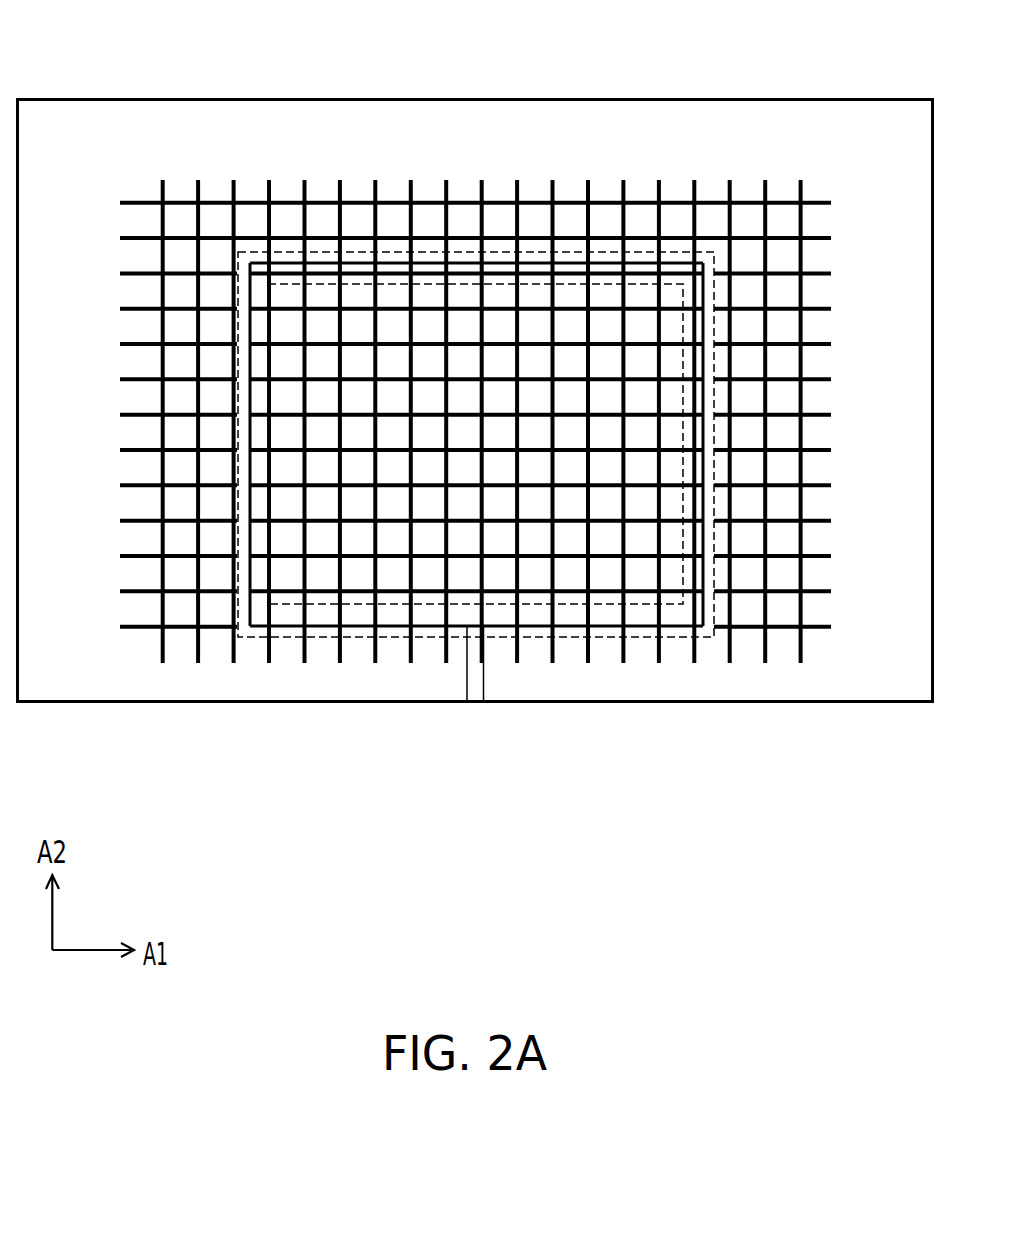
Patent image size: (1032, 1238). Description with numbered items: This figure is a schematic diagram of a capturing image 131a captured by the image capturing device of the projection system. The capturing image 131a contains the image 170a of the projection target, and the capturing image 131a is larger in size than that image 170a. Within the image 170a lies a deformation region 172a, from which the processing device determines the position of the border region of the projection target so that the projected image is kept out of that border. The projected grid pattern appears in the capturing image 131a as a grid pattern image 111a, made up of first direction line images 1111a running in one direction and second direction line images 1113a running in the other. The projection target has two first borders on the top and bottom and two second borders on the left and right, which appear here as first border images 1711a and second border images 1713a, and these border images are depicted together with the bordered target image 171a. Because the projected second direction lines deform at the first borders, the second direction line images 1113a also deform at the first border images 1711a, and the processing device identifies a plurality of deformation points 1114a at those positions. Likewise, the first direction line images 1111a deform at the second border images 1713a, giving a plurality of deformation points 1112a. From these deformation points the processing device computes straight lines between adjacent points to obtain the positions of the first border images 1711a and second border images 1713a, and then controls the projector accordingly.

The capturing image 131a is at (72, 99).
The grid pattern image 111a is at (633, 310).
The first direction line images 1111a is at (818, 271).
The deformation points 1112a is at (248, 387).
The second direction line images 1113a is at (802, 190).
The deformation points 1114a is at (582, 263).
The image of the projection target 170a is at (703, 263).
The conductive frame 171a is at (492, 263).
The first border images 1711a is at (322, 263).
The second border images 1713a is at (250, 328).
The deformation region 172a is at (433, 251).